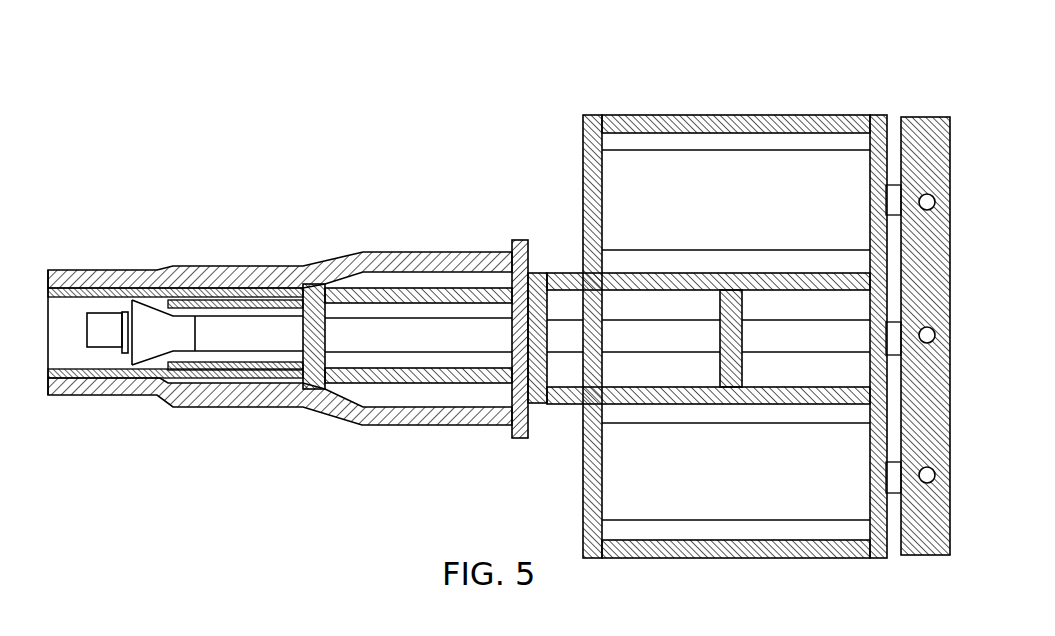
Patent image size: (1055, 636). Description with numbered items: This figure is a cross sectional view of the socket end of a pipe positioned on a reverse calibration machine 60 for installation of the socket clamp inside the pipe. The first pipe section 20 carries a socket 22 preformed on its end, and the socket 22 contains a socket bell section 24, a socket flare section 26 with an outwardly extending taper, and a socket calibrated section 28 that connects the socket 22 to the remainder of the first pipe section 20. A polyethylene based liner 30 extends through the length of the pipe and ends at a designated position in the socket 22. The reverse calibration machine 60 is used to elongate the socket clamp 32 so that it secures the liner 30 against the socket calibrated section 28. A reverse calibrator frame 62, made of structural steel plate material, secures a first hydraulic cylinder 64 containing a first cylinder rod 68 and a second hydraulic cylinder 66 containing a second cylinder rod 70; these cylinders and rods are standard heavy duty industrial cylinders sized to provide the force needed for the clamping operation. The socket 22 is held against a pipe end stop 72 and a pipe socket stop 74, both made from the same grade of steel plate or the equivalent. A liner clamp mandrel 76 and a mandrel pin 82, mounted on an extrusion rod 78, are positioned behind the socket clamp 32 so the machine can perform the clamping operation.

The first pipe section 20 is at (102, 270).
The socket 22 is at (338, 170).
The socket bell section 24 is at (416, 252).
The socket flare section 26 is at (507, 240).
The socket calibrated section 28 is at (195, 266).
The liner 30 is at (248, 297).
The socket clamp 32 is at (288, 300).
The reverse calibration machine 60 is at (728, 78).
The reverse calibrator frame 62 is at (811, 117).
The first hydraulic cylinder 64 is at (623, 158).
The second hydraulic cylinder 66 is at (670, 497).
The first cylinder rod 68 is at (897, 185).
The second cylinder rod 70 is at (889, 493).
The pipe end stop 72 is at (520, 438).
The pipe socket stop 74 is at (313, 407).
The liner clamp mandrel 76 is at (157, 355).
The extrusion rod 78 is at (397, 352).
The mandrel pin 82 is at (124, 353).